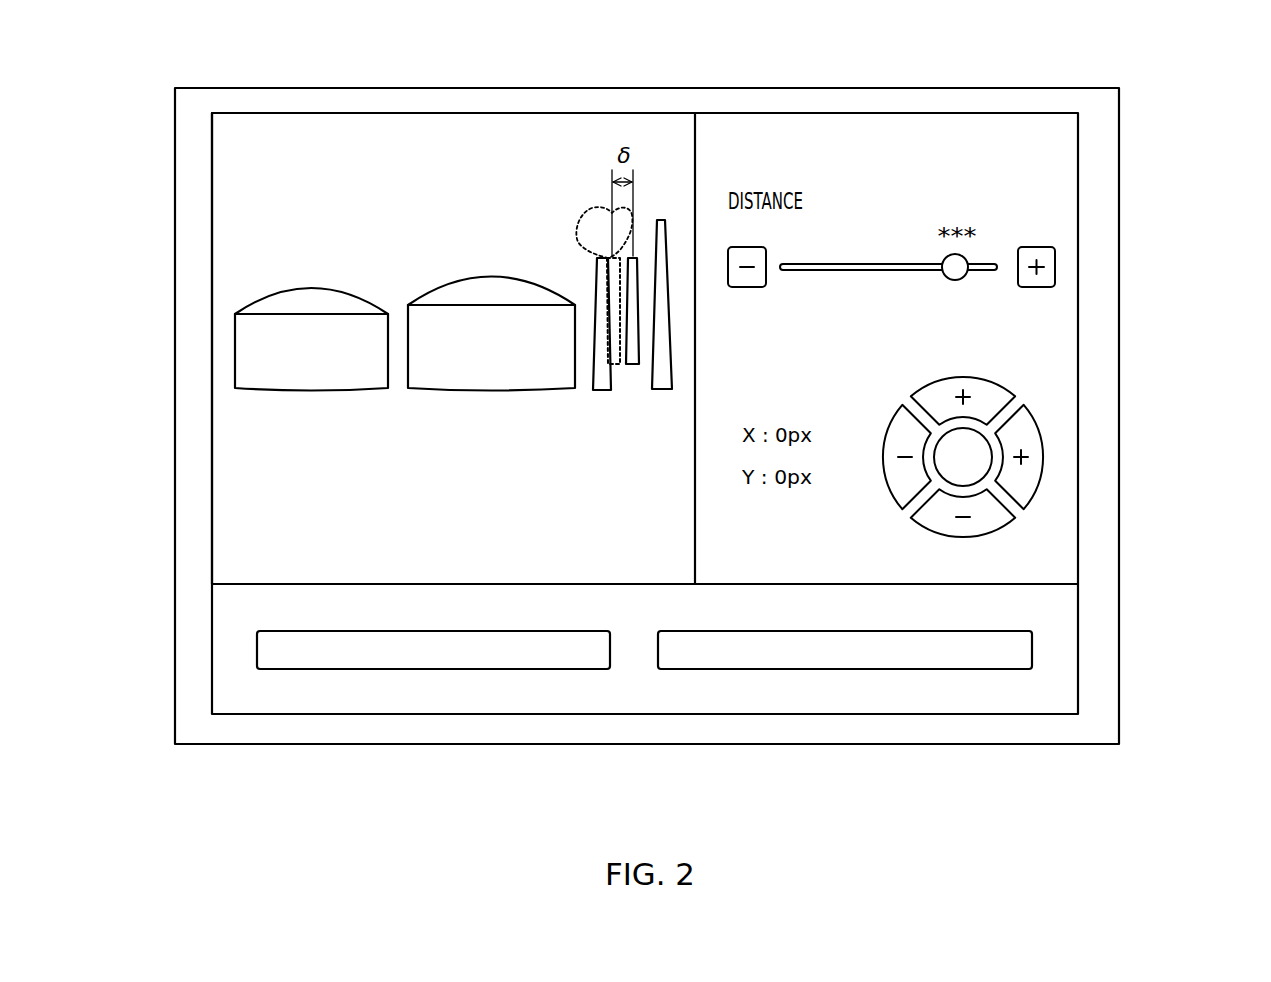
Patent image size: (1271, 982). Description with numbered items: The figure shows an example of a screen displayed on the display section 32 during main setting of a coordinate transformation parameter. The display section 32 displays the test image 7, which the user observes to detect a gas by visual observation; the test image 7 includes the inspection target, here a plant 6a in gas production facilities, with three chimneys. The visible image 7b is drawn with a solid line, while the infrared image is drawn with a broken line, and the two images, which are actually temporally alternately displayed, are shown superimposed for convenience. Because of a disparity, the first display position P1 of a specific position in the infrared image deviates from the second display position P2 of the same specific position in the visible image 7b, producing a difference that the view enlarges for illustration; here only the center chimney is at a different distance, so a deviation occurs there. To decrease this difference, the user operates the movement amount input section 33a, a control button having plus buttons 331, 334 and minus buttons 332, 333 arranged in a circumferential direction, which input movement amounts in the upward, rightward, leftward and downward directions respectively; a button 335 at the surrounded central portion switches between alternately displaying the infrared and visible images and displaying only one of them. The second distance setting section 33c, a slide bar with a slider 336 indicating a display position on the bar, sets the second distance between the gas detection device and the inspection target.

The test image 7 is at (210, 200).
The visible image 7b is at (210, 282).
The plant 6a is at (498, 382).
The first display position P1 is at (607, 257).
The second display position P2 is at (633, 257).
The display section 32 is at (1119, 402).
The movement amount input section 33a is at (1011, 449).
The second distance setting section 33c is at (891, 160).
The plus button 331 is at (967, 378).
The minus button 332 is at (887, 432).
The minus button 333 is at (977, 537).
The plus button 334 is at (1003, 465).
The button 335 is at (973, 460).
The slider 336 is at (957, 268).